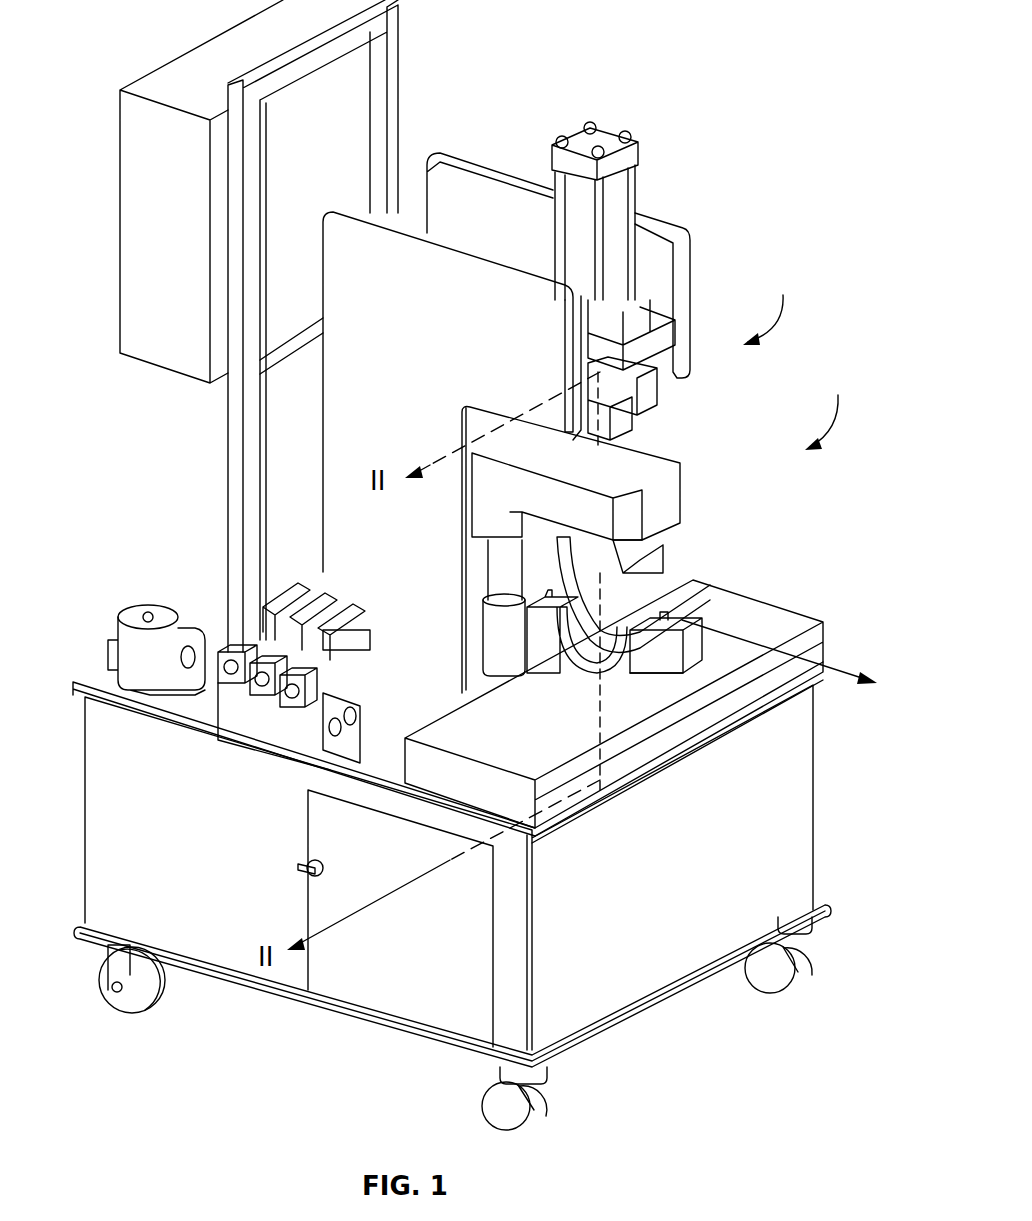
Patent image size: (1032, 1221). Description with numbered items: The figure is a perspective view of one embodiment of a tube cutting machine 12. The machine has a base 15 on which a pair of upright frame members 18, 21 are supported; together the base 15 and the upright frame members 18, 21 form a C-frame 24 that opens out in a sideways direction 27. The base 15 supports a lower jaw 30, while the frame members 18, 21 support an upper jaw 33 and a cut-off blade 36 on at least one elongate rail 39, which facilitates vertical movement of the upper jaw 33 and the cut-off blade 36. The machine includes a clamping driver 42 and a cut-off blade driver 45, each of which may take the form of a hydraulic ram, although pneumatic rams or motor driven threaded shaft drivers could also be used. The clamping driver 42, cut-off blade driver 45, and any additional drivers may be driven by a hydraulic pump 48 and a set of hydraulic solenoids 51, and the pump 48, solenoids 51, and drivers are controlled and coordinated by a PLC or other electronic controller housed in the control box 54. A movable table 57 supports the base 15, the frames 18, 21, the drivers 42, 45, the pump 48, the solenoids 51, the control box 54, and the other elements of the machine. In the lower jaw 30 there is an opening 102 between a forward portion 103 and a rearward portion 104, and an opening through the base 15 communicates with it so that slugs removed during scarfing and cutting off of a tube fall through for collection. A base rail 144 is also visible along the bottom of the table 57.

The tube cutting machine 12 is at (770, 306).
The base 15 is at (740, 700).
The upright frame member 18 is at (440, 237).
The upright frame member 21 is at (470, 180).
The C-frame 24 is at (829, 409).
The sideways direction 27 is at (837, 667).
The lower jaw 30 is at (667, 678).
The upper jaw 33 is at (640, 557).
The cut-off blade 36 is at (613, 455).
The elongate rail 39 is at (608, 600).
The clamping driver 42 is at (493, 623).
The cut-off blade driver 45 is at (580, 245).
The hydraulic pump 48 is at (135, 612).
The set of hydraulic solenoids 51 is at (267, 720).
The control box 54 is at (180, 243).
The movable table 57 is at (677, 919).
The opening 102 is at (580, 660).
The forward portion 103 is at (588, 660).
The rearward portion 104 is at (740, 607).
The base frame 144 is at (393, 1007).